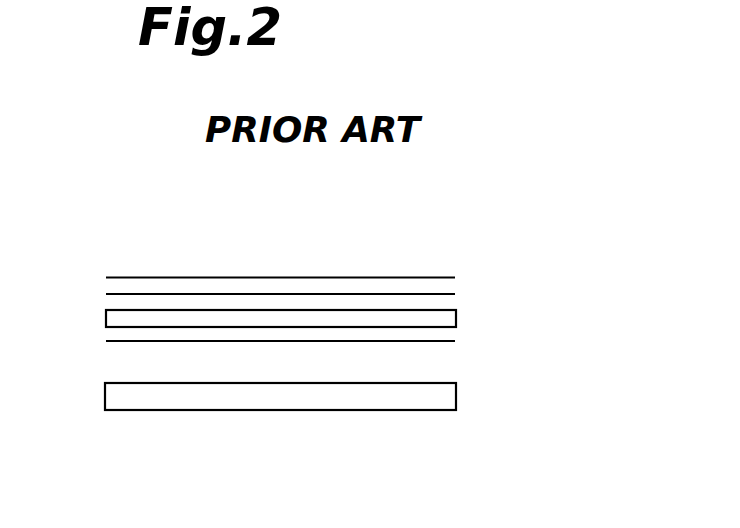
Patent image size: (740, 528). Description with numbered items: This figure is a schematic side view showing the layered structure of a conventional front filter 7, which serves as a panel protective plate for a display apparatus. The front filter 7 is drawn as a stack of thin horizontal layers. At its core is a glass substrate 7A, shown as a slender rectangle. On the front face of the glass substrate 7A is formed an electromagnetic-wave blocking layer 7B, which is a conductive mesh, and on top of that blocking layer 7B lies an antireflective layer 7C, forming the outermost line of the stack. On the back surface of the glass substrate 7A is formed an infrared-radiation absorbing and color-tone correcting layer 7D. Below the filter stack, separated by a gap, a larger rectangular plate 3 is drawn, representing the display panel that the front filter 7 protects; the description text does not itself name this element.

The front filter 7 is at (173, 266).
The glass substrate 7A is at (450, 319).
The electromagnetic-wave blocking layer 7B is at (323, 295).
The antireflective layer 7C is at (420, 277).
The infrared-radiation absorbing and color-tone correcting layer 7D is at (411, 339).
The substrate 3 is at (290, 400).